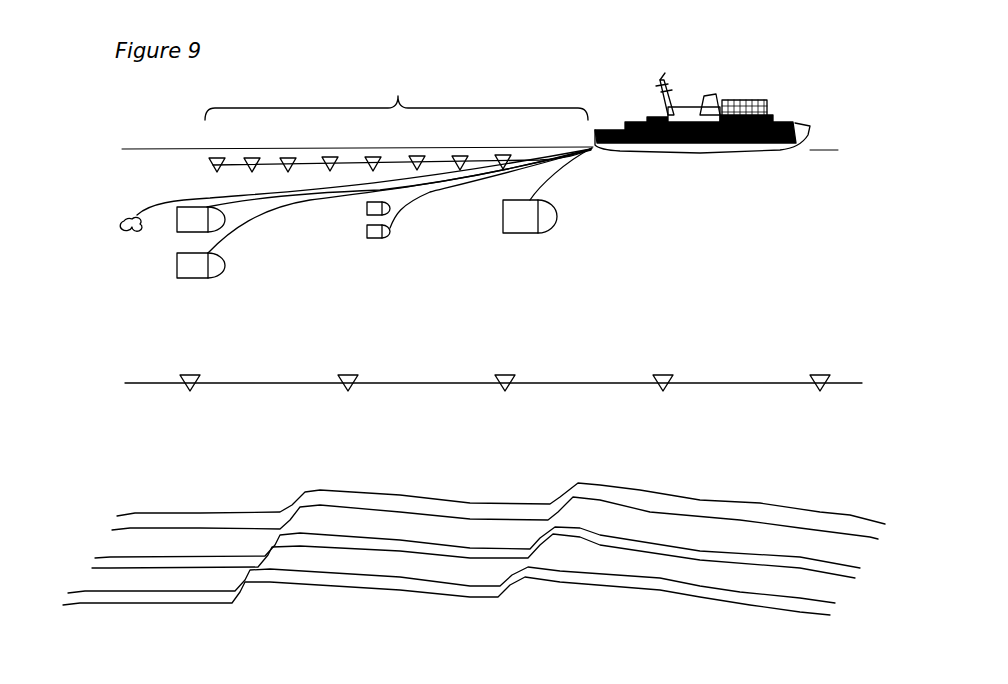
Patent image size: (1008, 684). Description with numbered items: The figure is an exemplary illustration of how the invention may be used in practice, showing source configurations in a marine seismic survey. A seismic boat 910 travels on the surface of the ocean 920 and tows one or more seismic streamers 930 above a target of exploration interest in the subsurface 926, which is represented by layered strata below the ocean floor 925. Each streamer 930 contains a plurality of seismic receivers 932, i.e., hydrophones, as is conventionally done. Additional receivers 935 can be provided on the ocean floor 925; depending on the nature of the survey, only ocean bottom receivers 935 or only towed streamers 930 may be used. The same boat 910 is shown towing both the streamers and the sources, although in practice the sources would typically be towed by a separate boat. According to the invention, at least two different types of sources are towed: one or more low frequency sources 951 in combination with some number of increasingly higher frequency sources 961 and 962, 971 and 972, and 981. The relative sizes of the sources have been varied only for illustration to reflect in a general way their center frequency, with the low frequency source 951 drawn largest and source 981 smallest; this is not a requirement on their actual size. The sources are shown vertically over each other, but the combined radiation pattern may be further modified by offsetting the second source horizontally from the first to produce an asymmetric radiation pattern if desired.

The seismic boat 910 is at (768, 103).
The surface of the ocean 920 is at (156, 148).
The ocean floor 925 is at (131, 383).
The subsurface 926 is at (463, 565).
The seismic streamer 930 is at (398, 111).
The seismic receivers 932 is at (374, 155).
The ocean bottom receivers 935 is at (190, 391).
The low frequency source 951 is at (503, 225).
The higher frequency source 961 is at (177, 221).
The higher frequency source 962 is at (177, 267).
The higher frequency source 971 is at (367, 208).
The higher frequency source 972 is at (367, 233).
The higher frequency source 981 is at (121, 217).